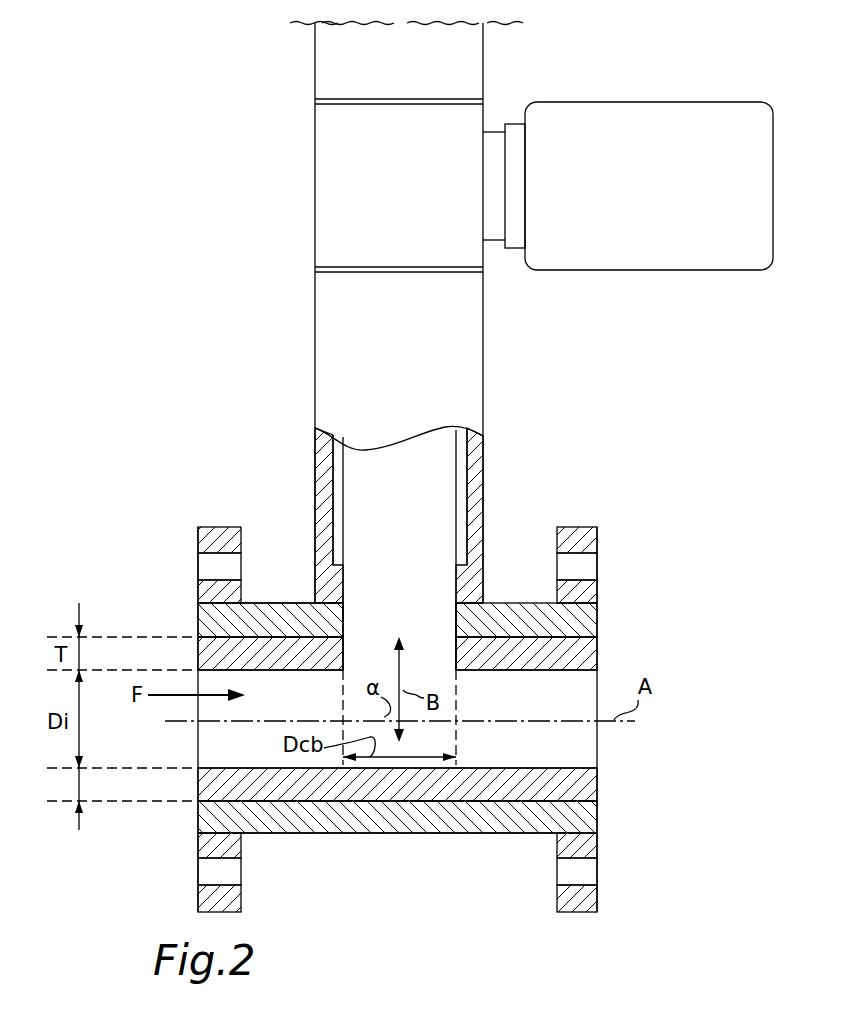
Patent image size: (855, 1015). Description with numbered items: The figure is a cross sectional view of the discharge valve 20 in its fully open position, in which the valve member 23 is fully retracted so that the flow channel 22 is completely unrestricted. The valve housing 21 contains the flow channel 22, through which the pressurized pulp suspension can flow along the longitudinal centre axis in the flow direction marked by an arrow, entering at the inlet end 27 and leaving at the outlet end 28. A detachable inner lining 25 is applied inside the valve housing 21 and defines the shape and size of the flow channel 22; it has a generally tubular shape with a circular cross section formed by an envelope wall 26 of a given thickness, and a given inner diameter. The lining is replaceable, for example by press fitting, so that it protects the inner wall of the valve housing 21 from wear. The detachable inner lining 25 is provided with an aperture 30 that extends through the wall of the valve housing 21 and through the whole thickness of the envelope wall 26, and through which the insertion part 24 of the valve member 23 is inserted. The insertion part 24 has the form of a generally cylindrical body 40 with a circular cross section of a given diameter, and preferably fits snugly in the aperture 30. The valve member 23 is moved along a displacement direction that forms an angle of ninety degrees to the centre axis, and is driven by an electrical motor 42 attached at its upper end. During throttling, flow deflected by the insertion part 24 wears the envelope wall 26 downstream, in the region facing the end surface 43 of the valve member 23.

The discharge valve 20 is at (657, 460).
The valve housing 21 is at (598, 591).
The flow channel 22 is at (424, 719).
The valve member 23 is at (435, 511).
The insertion part 24 is at (430, 650).
The detachable inner lining 25 is at (234, 741).
The envelope wall 26 is at (573, 784).
The inlet end 27 is at (192, 624).
The outlet end 28 is at (610, 655).
The aperture 30 is at (342, 672).
The cylindrical body 40 is at (445, 549).
The electrical motor 42 is at (642, 136).
The end surface 43 is at (433, 670).